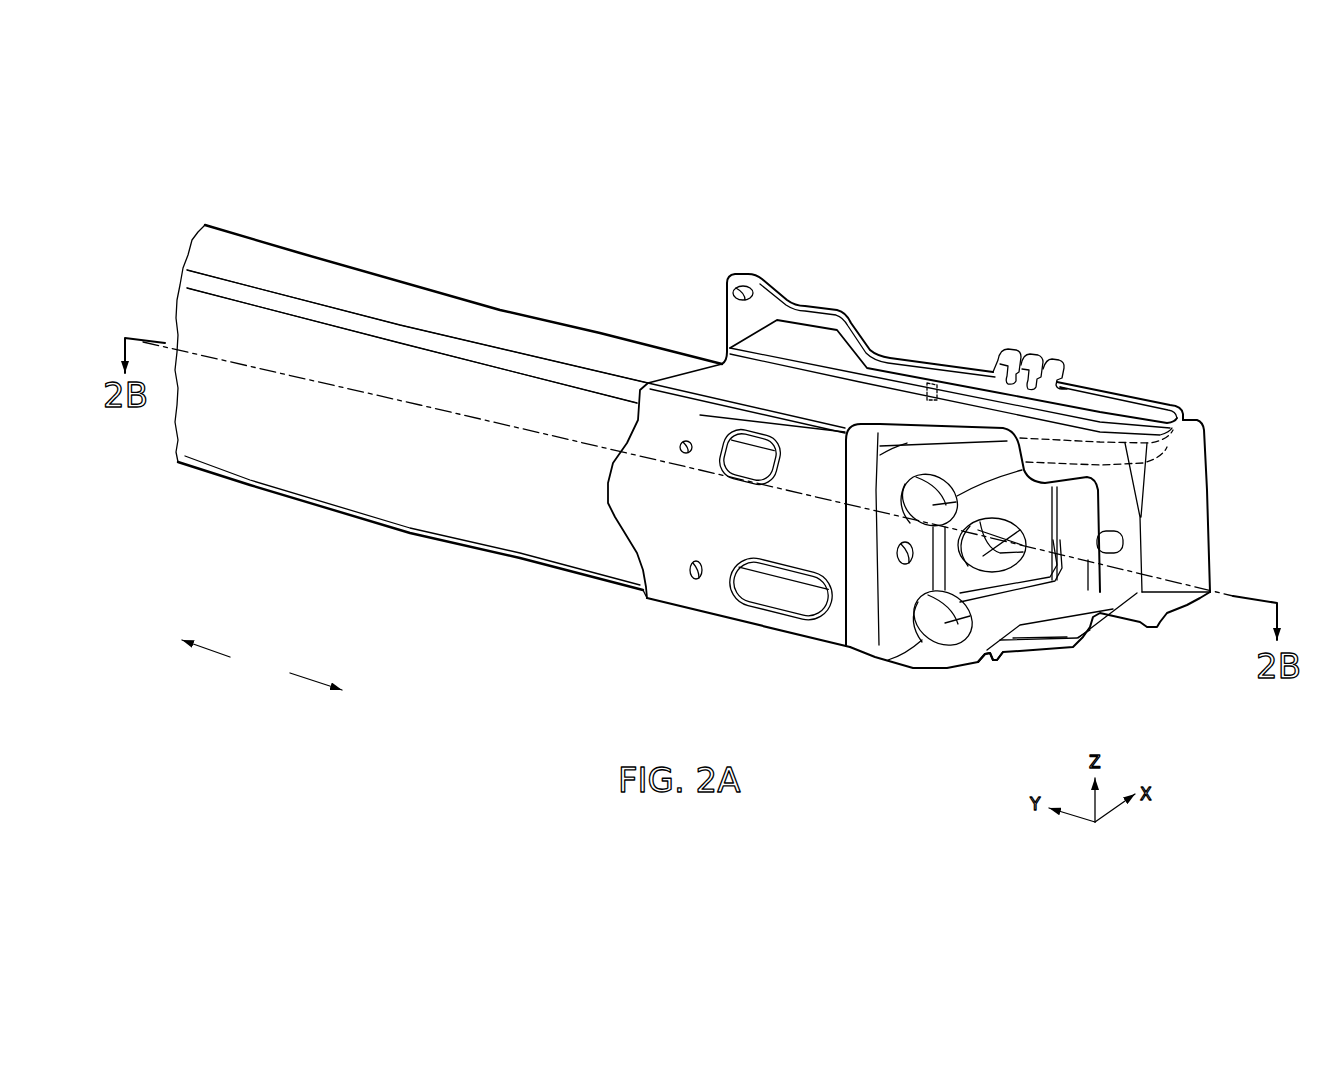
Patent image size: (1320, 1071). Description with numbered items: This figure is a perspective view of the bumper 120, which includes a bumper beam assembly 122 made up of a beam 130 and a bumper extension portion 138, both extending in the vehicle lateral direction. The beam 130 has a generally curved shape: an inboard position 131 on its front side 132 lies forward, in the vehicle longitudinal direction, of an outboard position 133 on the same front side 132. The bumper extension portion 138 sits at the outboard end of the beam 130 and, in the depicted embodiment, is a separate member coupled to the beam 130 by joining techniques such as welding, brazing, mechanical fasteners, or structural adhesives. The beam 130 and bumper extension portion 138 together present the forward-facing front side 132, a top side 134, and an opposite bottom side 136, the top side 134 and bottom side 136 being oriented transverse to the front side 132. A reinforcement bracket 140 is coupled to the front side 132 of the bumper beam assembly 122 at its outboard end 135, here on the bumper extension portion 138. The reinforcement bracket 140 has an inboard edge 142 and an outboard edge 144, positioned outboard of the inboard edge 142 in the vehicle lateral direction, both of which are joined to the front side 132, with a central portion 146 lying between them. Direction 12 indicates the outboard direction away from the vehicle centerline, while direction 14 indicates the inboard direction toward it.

The outboard direction 12 is at (313, 680).
The inboard direction 14 is at (212, 648).
The bumper 120 is at (178, 181).
The bumper beam assembly 122 is at (218, 167).
The beam 130 is at (513, 300).
The inboard position 131 is at (198, 305).
The front side 132 is at (427, 496).
The outboard position 133 is at (632, 565).
The top side 134 is at (368, 284).
The outboard end 135 is at (985, 335).
The bottom side 136 is at (520, 563).
The bumper extension portion 138 is at (822, 283).
The reinforcement bracket 140 is at (905, 683).
The inboard edge 142 is at (863, 618).
The outboard edge 144 is at (1095, 592).
The central portion 146 is at (982, 668).